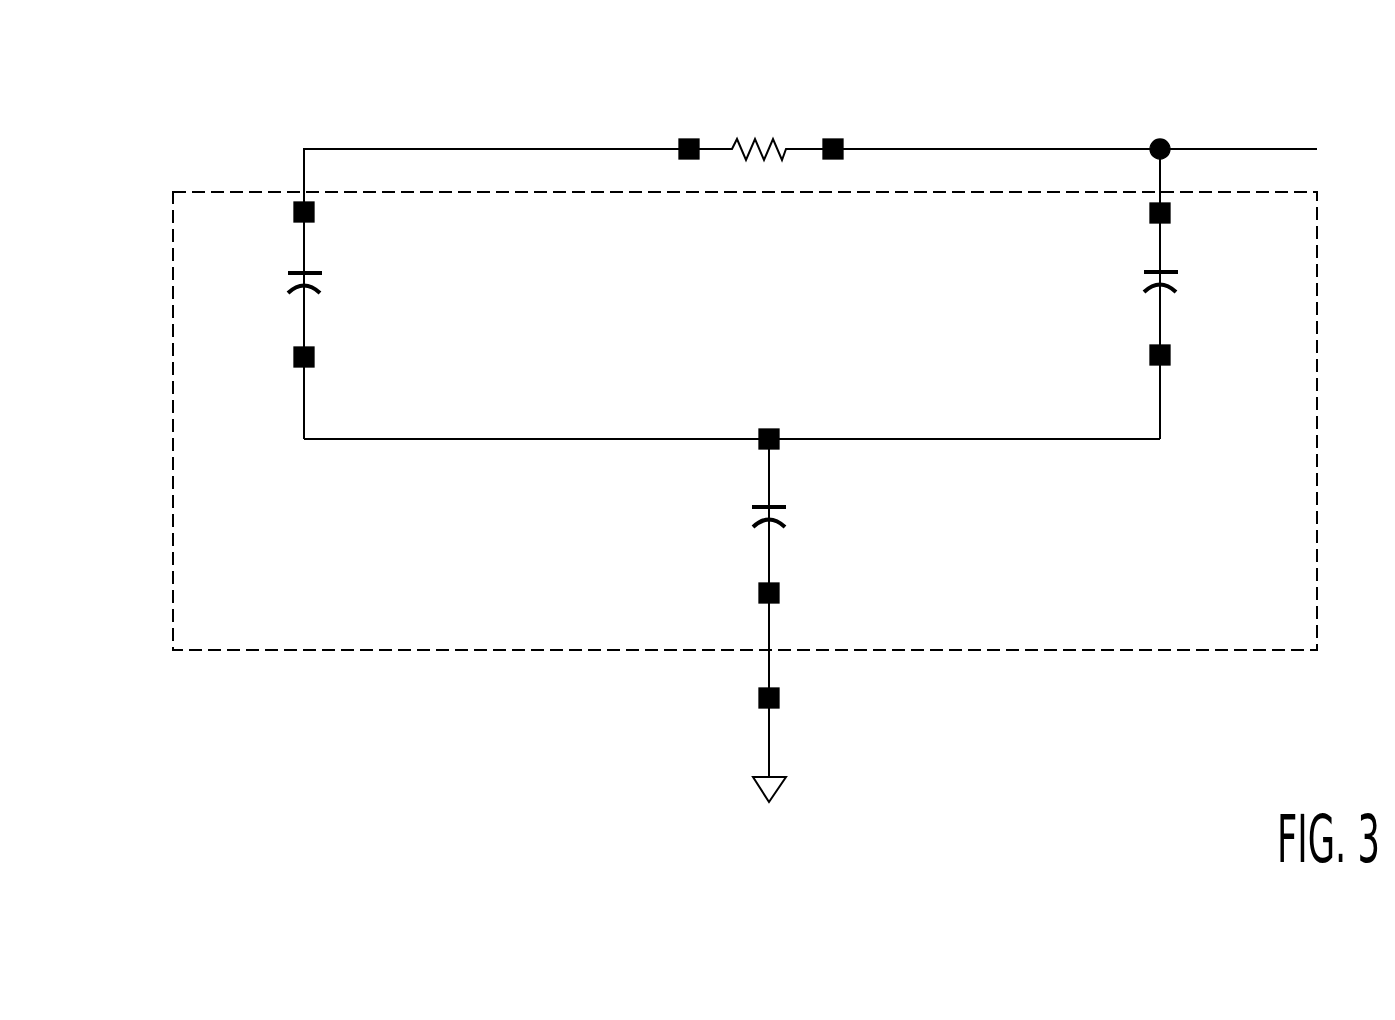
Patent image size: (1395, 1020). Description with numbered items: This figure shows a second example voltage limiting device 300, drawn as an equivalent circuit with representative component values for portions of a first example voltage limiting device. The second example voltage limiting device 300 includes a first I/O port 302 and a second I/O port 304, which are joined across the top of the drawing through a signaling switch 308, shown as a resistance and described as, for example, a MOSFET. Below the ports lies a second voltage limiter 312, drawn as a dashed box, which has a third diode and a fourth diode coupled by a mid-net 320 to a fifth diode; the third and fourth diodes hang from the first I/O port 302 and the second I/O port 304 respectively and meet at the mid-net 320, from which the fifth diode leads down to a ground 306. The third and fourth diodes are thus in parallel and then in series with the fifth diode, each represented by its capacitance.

The second example voltage limiting device 300 is at (104, 76).
The first I/O port 302 is at (303, 165).
The second I/O port 304 is at (1171, 142).
The ground 306 is at (782, 792).
The signaling switch 308 is at (776, 147).
The second voltage limiter 312 is at (369, 652).
The mid-net 320 is at (880, 438).